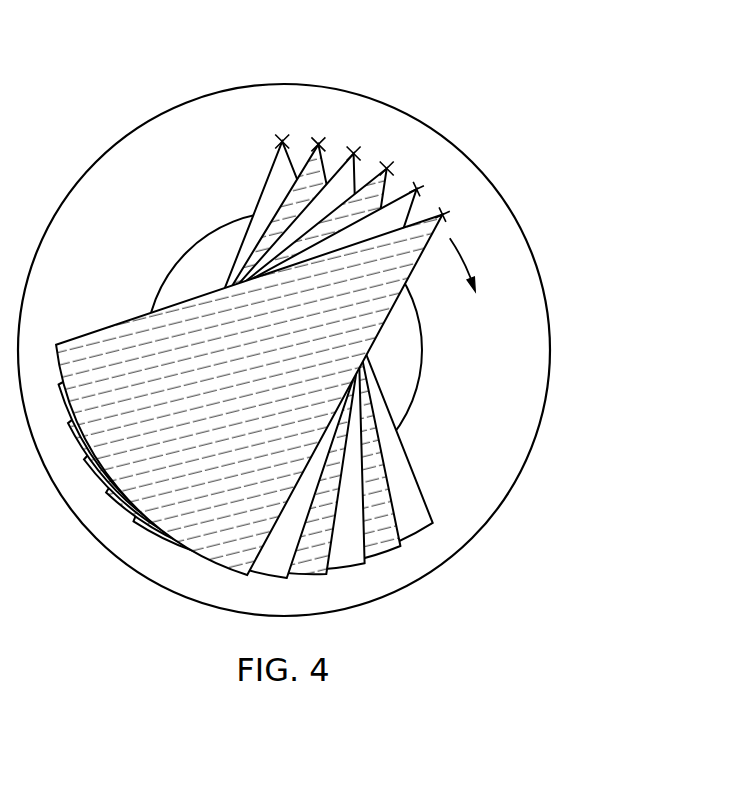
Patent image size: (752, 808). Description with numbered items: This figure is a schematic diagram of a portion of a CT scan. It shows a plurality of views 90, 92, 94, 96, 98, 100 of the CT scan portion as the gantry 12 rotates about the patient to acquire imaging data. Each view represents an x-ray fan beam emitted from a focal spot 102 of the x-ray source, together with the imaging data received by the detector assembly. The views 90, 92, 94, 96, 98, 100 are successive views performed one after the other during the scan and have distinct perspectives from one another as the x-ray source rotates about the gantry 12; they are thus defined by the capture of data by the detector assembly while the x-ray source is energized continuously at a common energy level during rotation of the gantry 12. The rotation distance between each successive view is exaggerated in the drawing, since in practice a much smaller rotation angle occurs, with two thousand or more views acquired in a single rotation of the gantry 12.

The gantry 12 is at (109, 148).
The view 90 is at (270, 172).
The view 92 is at (310, 158).
The view 94 is at (342, 166).
The view 96 is at (372, 180).
The view 98 is at (404, 196).
The view 100 is at (425, 247).
The focal spot 102 is at (446, 211).